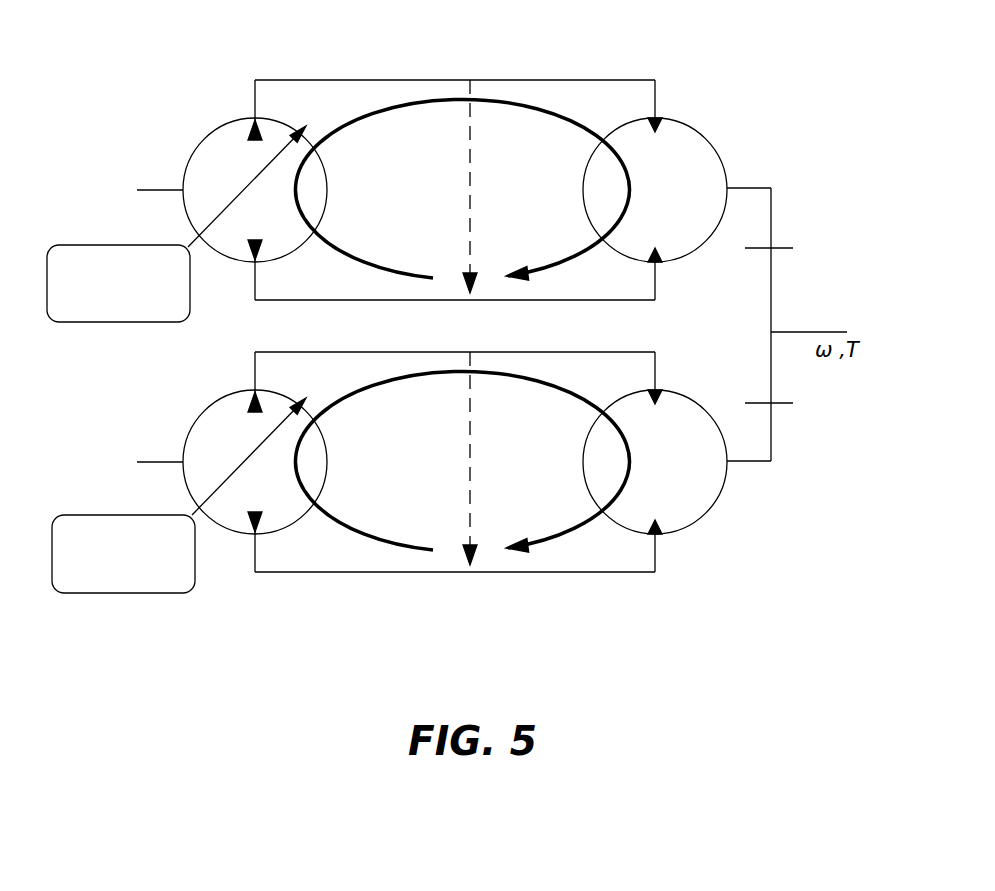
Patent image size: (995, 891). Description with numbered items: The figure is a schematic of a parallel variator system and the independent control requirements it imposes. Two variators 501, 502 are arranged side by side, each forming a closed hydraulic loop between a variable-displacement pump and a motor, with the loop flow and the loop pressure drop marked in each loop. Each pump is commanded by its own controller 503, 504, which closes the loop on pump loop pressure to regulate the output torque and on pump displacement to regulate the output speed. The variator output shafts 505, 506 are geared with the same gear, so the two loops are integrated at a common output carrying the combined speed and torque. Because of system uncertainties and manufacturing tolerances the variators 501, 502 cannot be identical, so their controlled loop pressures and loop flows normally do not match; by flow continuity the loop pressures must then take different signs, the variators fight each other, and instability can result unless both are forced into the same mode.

The variator 501 is at (472, 155).
The variator 502 is at (471, 497).
The controller 503 is at (143, 313).
The controller 504 is at (149, 585).
The variator output shaft 505 is at (695, 190).
The variator output shaft 506 is at (694, 462).